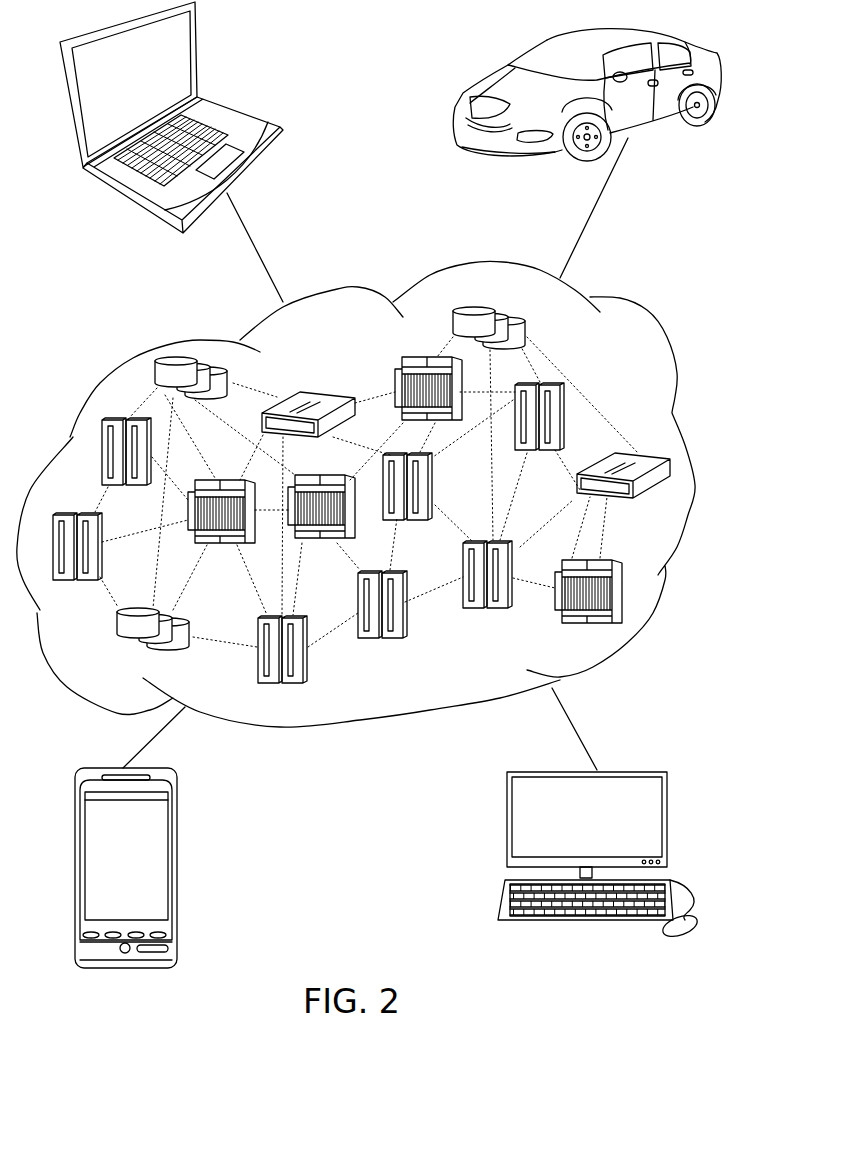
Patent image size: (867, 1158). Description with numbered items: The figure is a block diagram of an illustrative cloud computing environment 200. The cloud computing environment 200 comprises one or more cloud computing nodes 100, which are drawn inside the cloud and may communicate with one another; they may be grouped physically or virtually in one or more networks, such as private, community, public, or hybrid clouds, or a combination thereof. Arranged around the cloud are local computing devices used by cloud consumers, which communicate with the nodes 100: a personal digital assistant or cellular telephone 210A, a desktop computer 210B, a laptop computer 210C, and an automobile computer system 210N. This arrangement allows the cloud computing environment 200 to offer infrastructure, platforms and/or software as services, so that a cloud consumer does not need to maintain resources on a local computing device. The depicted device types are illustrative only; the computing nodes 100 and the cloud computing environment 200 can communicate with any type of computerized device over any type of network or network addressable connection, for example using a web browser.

The cloud computing node 100 is at (647, 437).
The cloud computing environment 200 is at (653, 318).
The cellular telephone 210A is at (173, 790).
The desktop computer 210B is at (667, 788).
The laptop computer 210C is at (284, 97).
The automobile computer system 210N is at (680, 42).